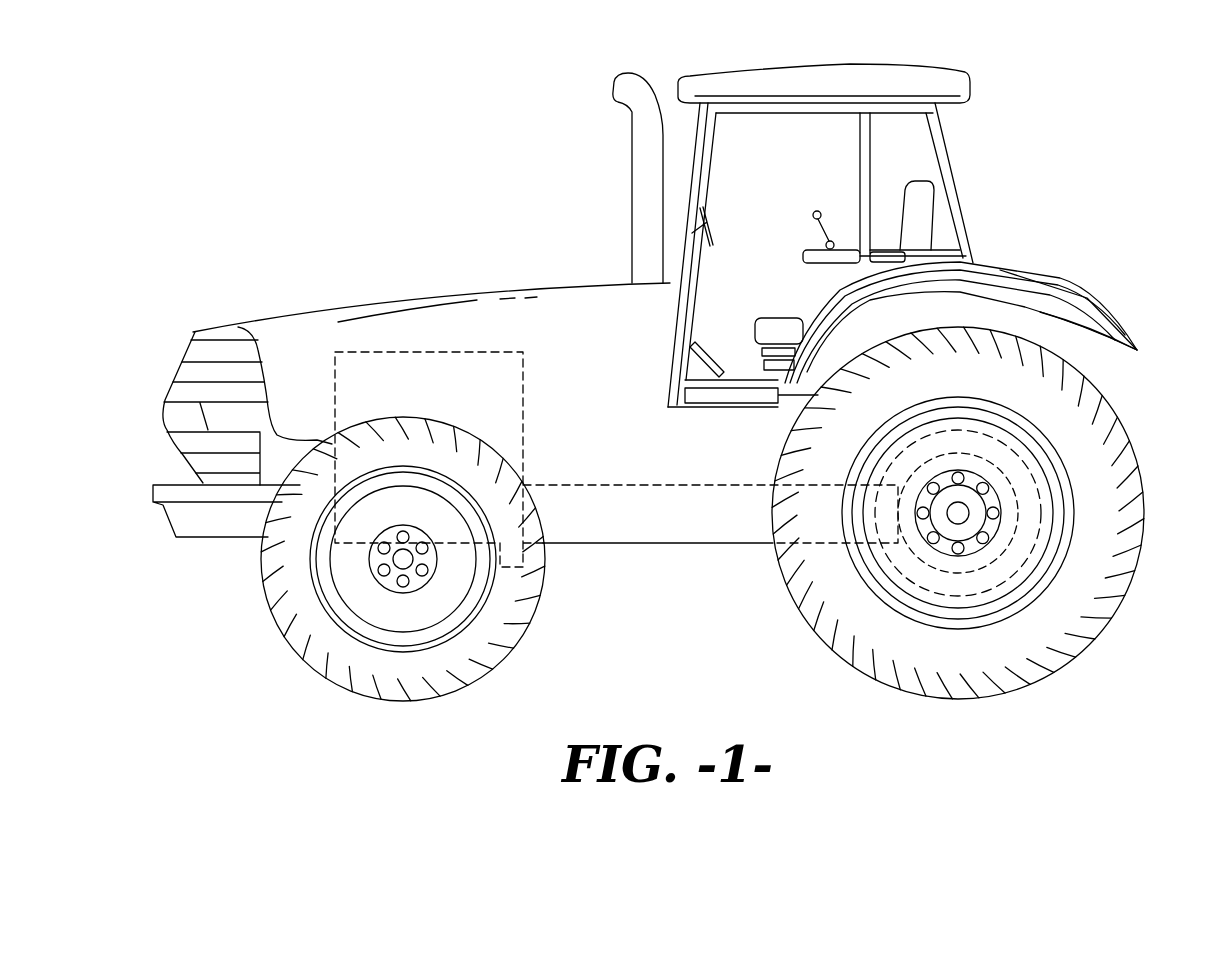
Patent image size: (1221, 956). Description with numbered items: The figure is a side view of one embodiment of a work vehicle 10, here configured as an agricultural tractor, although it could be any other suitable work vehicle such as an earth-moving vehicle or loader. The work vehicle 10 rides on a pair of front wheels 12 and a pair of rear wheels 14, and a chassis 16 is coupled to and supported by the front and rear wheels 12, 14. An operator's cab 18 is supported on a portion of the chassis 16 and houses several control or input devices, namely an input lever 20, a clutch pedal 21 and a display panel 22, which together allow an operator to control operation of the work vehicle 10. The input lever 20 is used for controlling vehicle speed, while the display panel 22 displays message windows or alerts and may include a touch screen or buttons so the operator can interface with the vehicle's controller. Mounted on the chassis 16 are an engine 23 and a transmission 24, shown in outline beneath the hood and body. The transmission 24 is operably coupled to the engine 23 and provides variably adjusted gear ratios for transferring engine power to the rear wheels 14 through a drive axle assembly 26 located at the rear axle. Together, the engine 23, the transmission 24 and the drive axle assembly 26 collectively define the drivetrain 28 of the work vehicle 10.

The work vehicle 10 is at (337, 197).
The front wheels 12 is at (262, 582).
The rear wheels 14 is at (1147, 543).
The chassis 16 is at (608, 545).
The operator's cab 18 is at (965, 193).
The input lever 20 is at (812, 213).
The clutch pedal 21 is at (723, 366).
The display panel 22 is at (712, 216).
The engine 23 is at (398, 352).
The transmission 24 is at (667, 485).
The drive axle assembly 26 is at (1027, 514).
The drivetrain 28 is at (579, 300).